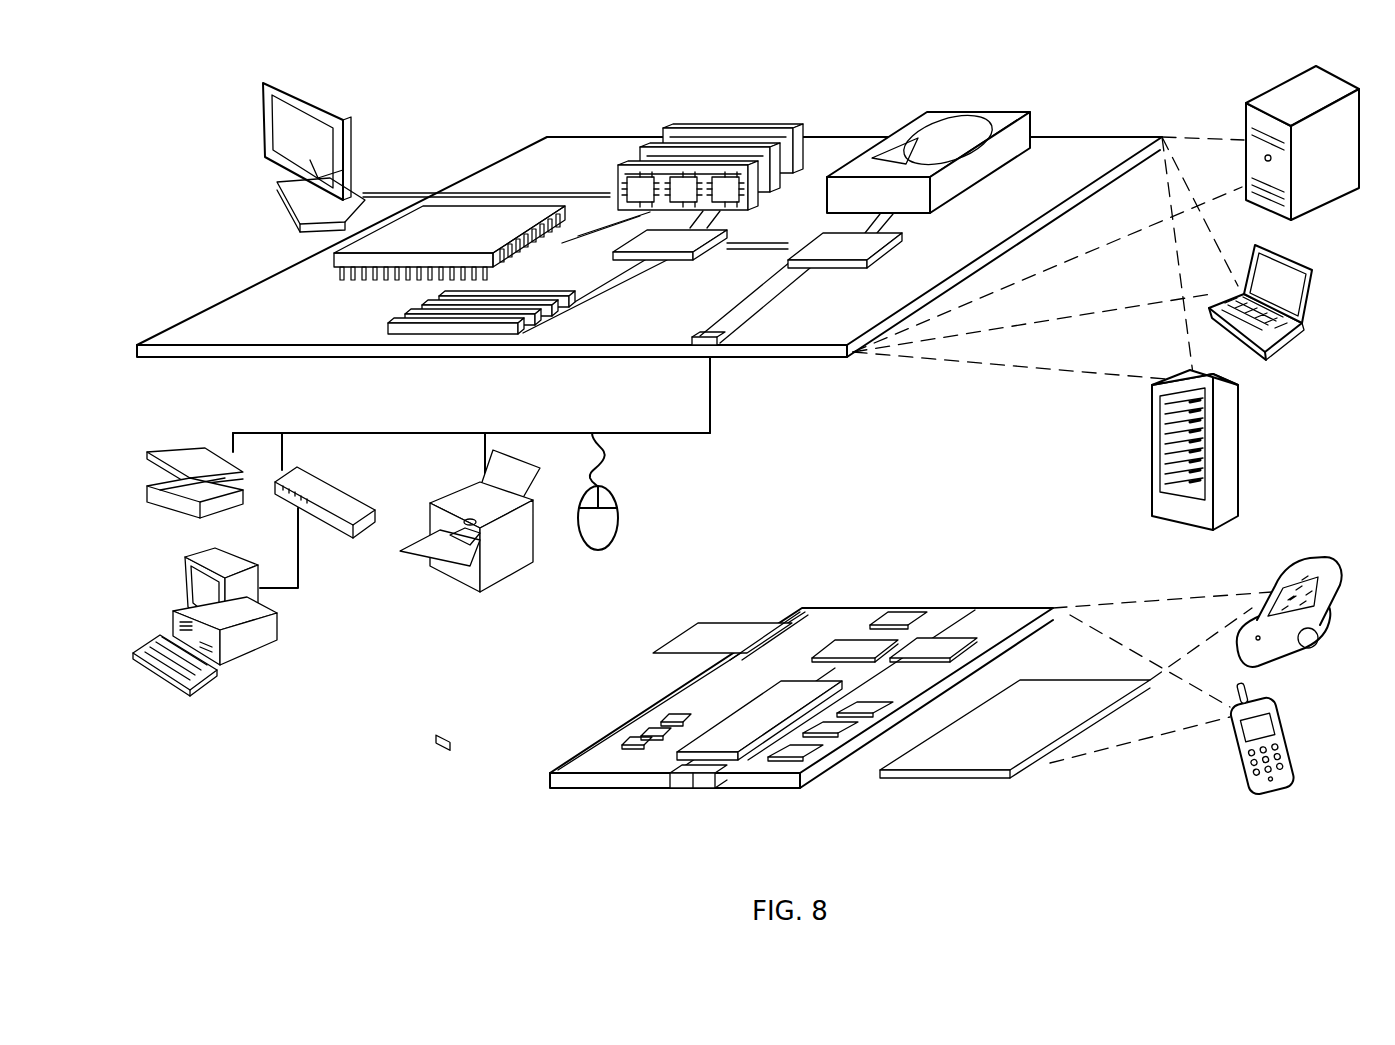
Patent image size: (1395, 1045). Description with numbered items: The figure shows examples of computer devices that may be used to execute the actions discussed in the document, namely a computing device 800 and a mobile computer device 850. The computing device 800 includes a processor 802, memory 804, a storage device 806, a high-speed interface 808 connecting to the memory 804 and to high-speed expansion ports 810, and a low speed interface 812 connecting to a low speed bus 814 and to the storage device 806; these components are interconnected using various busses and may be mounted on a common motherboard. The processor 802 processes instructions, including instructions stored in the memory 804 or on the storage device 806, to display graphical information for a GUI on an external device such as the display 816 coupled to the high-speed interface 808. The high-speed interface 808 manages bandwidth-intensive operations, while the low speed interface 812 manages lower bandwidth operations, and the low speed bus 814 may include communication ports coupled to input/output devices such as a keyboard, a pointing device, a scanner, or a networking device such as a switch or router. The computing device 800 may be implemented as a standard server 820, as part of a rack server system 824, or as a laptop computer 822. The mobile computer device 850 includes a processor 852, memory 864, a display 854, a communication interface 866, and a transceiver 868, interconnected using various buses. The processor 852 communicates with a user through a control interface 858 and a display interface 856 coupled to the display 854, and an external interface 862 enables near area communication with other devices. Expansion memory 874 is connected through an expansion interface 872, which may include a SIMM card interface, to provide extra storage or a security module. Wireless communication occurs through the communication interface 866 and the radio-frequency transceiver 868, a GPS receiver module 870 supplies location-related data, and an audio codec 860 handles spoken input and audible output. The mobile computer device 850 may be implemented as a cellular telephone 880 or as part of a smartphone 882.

The computing device 800 is at (467, 106).
The processor 802 is at (338, 255).
The memory 804 is at (666, 132).
The storage device 806 is at (926, 124).
The high-speed interface 808 is at (645, 242).
The high-speed expansion ports 810 is at (398, 320).
The low speed interface 812 is at (829, 243).
The low speed bus 814 is at (722, 347).
The display 816 is at (263, 80).
The standard server 820 is at (1246, 125).
The laptop computer 822 is at (1315, 270).
The rack server system 824 is at (1152, 476).
The mobile computer device 850 is at (522, 789).
The processor 852 is at (730, 742).
The display 854 is at (972, 756).
The display interface 856 is at (800, 750).
The control interface 858 is at (835, 727).
The audio codec 860 is at (863, 705).
The external interface 862 is at (703, 778).
The memory 864 is at (642, 734).
The communication interface 866 is at (857, 648).
The transceiver 868 is at (934, 648).
The GPS receiver module 870 is at (908, 612).
The expansion interface 872 is at (778, 623).
The expansion memory 874 is at (708, 623).
The cellular telephone 880 is at (1294, 560).
The smartphone 882 is at (1233, 757).